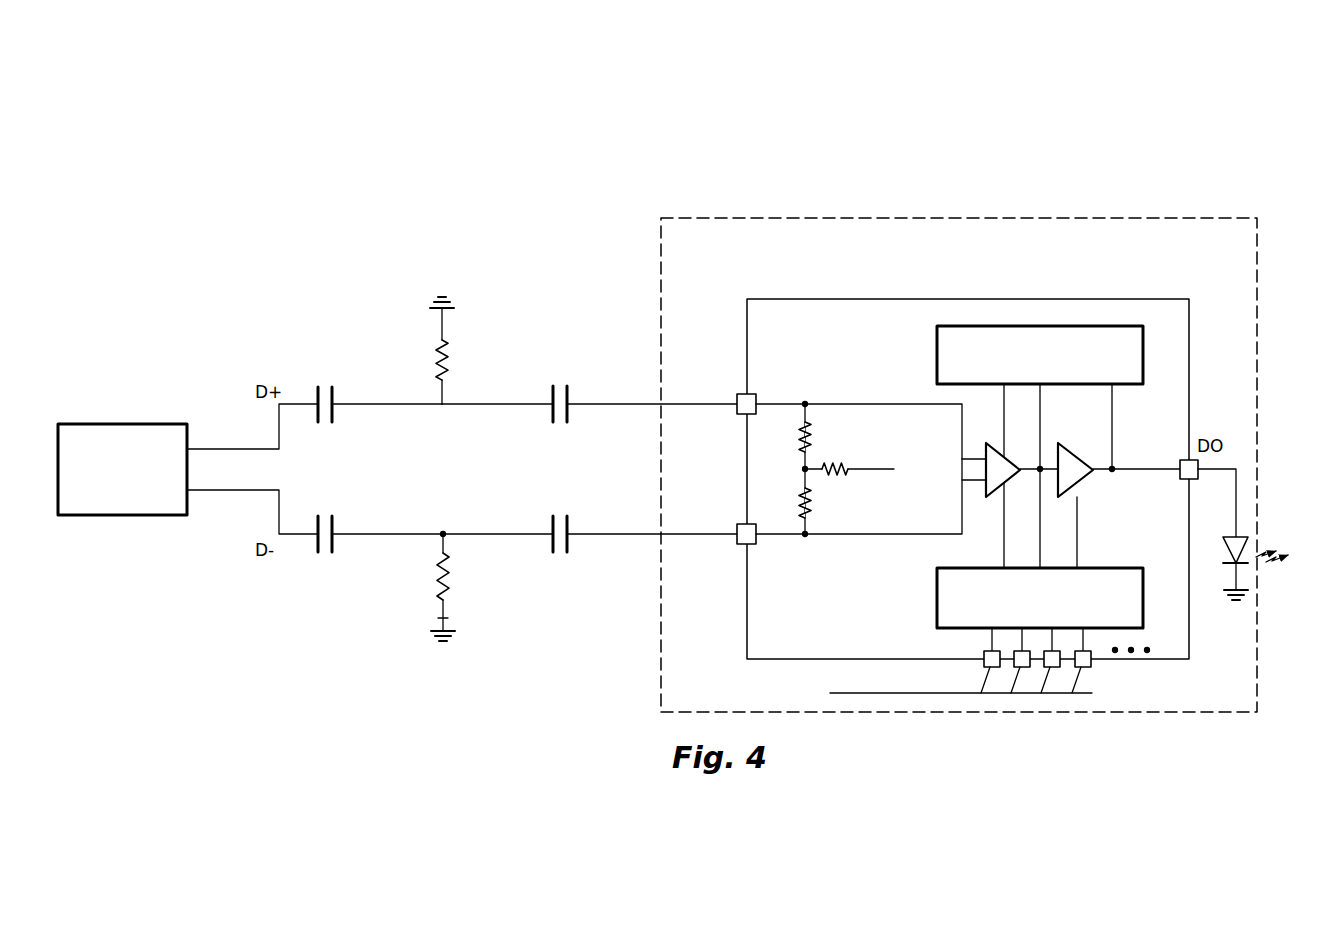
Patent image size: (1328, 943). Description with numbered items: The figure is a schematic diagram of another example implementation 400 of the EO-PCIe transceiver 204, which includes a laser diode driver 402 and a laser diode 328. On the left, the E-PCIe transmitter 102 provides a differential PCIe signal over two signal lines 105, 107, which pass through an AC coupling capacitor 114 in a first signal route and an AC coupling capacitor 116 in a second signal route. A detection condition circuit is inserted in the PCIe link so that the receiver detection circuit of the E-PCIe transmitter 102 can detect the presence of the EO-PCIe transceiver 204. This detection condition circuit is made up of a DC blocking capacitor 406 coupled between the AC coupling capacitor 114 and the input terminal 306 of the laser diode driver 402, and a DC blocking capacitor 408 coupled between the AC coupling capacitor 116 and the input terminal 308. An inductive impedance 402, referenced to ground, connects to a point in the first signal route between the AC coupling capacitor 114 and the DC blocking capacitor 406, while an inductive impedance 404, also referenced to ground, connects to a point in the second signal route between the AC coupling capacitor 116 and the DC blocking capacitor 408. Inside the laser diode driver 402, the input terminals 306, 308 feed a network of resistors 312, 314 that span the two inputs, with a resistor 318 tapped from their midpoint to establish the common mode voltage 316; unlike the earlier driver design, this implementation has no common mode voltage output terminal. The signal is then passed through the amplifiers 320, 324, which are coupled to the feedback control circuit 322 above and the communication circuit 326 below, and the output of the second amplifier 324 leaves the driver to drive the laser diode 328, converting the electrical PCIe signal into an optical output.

The example implementation 400 is at (1244, 142).
The EO-PCIe transceiver 204 is at (706, 244).
The laser diode driver 402 is at (736, 305).
The E-PCIe transmitter 102 is at (108, 502).
The D+ signal line 105 is at (234, 449).
The D- signal line 107 is at (234, 490).
The AC coupling capacitor 114 is at (334, 392).
The AC coupling capacitor 116 is at (334, 546).
The inductive impedance 404 is at (447, 567).
The DC blocking capacitor 406 is at (570, 392).
The DC blocking capacitor 408 is at (571, 546).
The input terminal 306 is at (742, 393).
The input terminal 308 is at (742, 544).
The resistor 312 is at (808, 436).
The resistor 314 is at (808, 516).
The common mode voltage 316 is at (902, 450).
The resistor 318 is at (829, 473).
The amplifier 320 is at (983, 475).
The feedback control circuit 322 is at (1087, 378).
The amplifier 324 is at (1087, 478).
The communication circuit 326 is at (1087, 620).
The laser diode 328 is at (1250, 543).